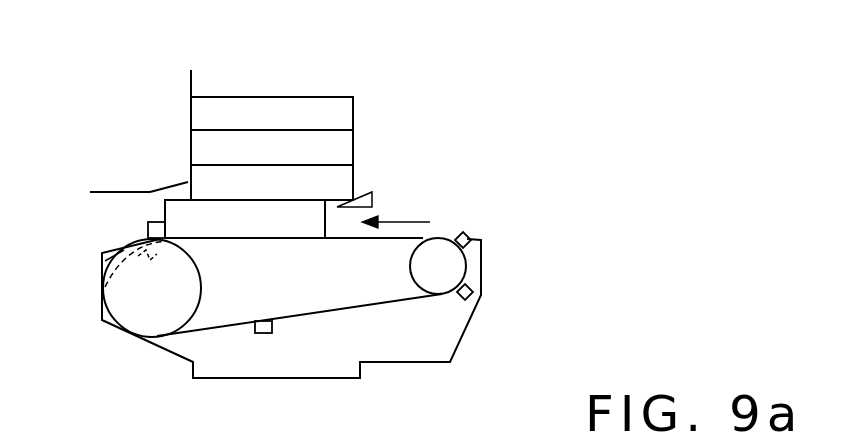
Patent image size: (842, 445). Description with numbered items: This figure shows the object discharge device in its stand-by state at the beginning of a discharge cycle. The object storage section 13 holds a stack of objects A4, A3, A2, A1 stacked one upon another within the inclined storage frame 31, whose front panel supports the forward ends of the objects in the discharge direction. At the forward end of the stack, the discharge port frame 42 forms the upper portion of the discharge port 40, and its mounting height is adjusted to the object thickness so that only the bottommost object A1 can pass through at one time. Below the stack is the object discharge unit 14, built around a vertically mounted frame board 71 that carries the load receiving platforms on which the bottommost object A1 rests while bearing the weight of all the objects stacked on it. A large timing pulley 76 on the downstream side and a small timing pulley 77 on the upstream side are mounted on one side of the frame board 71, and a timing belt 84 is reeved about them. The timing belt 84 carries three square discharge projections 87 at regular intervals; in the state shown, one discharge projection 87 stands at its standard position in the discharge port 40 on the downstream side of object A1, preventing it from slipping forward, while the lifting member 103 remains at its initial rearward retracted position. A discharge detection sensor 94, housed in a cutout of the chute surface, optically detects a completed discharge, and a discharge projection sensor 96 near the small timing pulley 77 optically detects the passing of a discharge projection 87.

The object storage section 13 is at (273, 84).
The storage frame 31 is at (188, 82).
The discharge port frame 42 is at (102, 192).
The discharge port 40 is at (148, 198).
The object A4 is at (353, 115).
The object A3 is at (353, 150).
The object A2 is at (353, 183).
The bottommost object A1 is at (265, 226).
The lifting member 103 is at (375, 199).
The object discharge unit 14 is at (463, 211).
The frame board 71 is at (443, 345).
The large timing pulley 76 is at (192, 315).
The discharge detection sensor 94 is at (104, 285).
The small timing pulley 77 is at (417, 288).
The timing belt 84 is at (380, 303).
The discharge projection 87 is at (148, 228).
The discharge projection sensor 96 is at (472, 298).